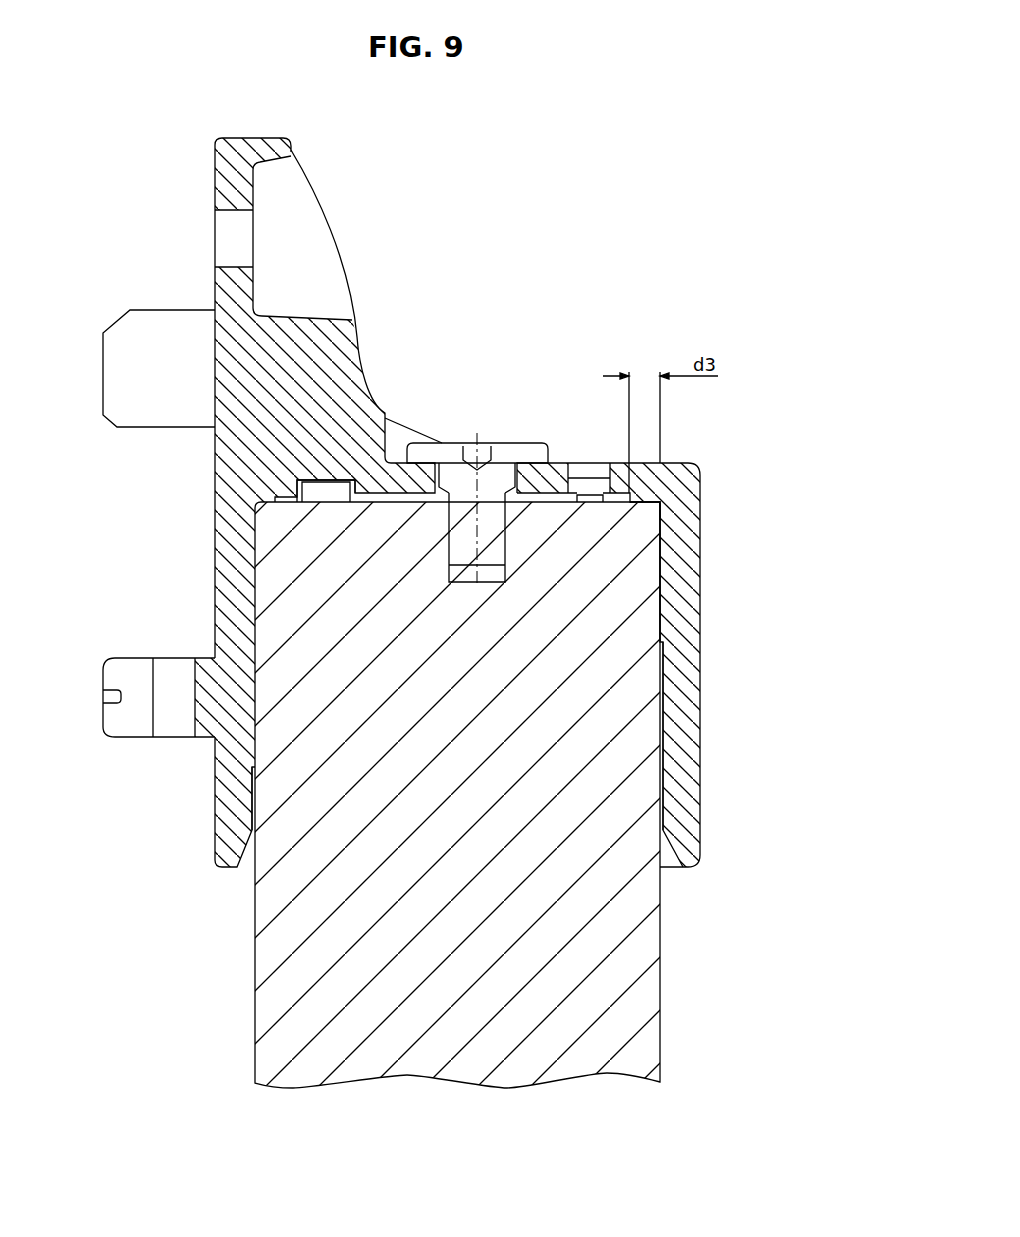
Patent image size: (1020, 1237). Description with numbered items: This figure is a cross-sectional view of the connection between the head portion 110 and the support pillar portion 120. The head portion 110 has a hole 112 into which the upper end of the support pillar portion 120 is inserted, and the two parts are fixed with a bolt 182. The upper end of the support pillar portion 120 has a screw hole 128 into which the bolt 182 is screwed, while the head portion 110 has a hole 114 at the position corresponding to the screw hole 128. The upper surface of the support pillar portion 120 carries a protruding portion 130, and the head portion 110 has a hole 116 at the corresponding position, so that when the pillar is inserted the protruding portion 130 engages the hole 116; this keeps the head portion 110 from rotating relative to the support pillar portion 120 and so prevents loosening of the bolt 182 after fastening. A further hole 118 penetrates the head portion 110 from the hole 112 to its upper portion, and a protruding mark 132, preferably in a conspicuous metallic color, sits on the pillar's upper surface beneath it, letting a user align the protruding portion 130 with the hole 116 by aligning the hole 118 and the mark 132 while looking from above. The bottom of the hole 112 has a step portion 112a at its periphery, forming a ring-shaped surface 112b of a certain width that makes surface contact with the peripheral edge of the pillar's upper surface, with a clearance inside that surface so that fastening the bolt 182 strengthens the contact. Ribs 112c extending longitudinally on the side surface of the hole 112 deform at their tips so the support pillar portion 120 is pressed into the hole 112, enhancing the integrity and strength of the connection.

The head portion 110 is at (333, 343).
The hole 112 is at (664, 593).
The step portion 112a is at (660, 540).
The ring-shaped surface 112b is at (662, 522).
The ribs 112c is at (663, 700).
The hole 114 is at (477, 459).
The hole 116 is at (310, 484).
The hole 118 is at (589, 462).
The support pillar portion 120 is at (672, 944).
The screw hole 128 is at (455, 520).
The protruding portion 130 is at (332, 490).
The mark 132 is at (579, 494).
The bolt 182 is at (518, 458).